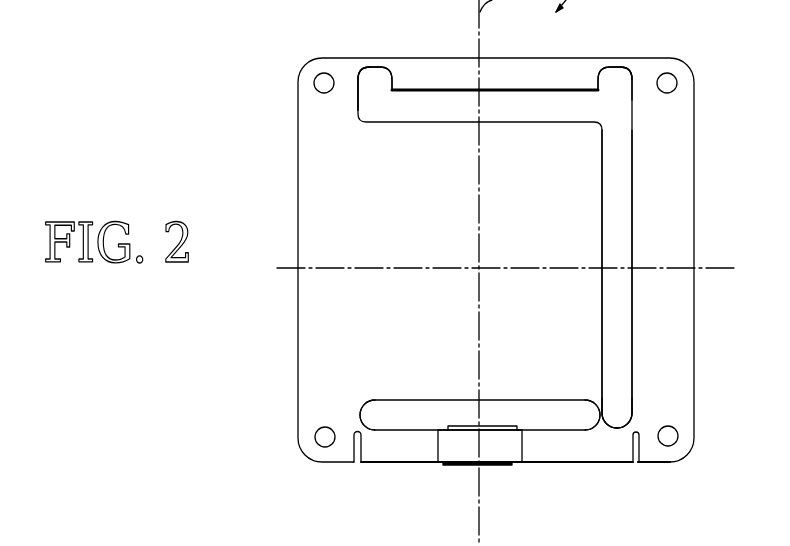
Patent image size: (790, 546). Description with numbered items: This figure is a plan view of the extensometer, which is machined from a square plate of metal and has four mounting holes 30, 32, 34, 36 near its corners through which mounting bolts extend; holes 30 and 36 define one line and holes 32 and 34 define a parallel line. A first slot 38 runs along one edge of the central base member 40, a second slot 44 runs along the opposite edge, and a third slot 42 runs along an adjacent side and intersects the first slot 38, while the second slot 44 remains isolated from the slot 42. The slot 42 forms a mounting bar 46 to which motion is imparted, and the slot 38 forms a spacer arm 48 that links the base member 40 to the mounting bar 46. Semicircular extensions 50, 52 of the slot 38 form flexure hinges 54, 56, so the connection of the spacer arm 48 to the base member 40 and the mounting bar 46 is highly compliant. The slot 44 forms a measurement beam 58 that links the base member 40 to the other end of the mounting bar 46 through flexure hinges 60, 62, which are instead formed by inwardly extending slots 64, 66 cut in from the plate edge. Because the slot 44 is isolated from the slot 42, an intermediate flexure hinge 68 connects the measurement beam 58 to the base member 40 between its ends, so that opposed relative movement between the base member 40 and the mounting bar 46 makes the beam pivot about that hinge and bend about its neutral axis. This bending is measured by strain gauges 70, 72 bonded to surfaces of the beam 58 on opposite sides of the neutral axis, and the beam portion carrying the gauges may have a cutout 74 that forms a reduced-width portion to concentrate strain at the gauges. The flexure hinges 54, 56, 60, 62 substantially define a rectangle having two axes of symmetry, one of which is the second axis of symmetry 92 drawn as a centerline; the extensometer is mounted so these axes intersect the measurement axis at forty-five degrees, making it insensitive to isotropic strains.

The mounting hole 30 is at (322, 84).
The mounting hole 32 is at (665, 84).
The mounting hole 34 is at (670, 437).
The mounting hole 36 is at (322, 437).
The first slot 38 is at (490, 107).
The base member 40 is at (490, 248).
The third slot 42 is at (613, 247).
The second slot 44 is at (440, 412).
The mounting bar 46 is at (676, 238).
The spacer arm 48 is at (493, 76).
The semicircular extension 50 is at (373, 80).
The semicircular extension 52 is at (615, 82).
The flexure hinge 54 is at (373, 62).
The flexure hinge 56 is at (617, 63).
The measurement beam 58 is at (407, 456).
The flexure hinge 60 is at (360, 422).
The flexure hinge 62 is at (633, 423).
The inwardly extending slot 64 is at (359, 463).
The inwardly extending slot 66 is at (635, 463).
The intermediate flexure hinge 68 is at (600, 407).
The strain gauge 70 is at (490, 424).
The strain gauge 72 is at (487, 463).
The cutout 74 is at (465, 449).
The second axis of symmetry 92 is at (290, 268).